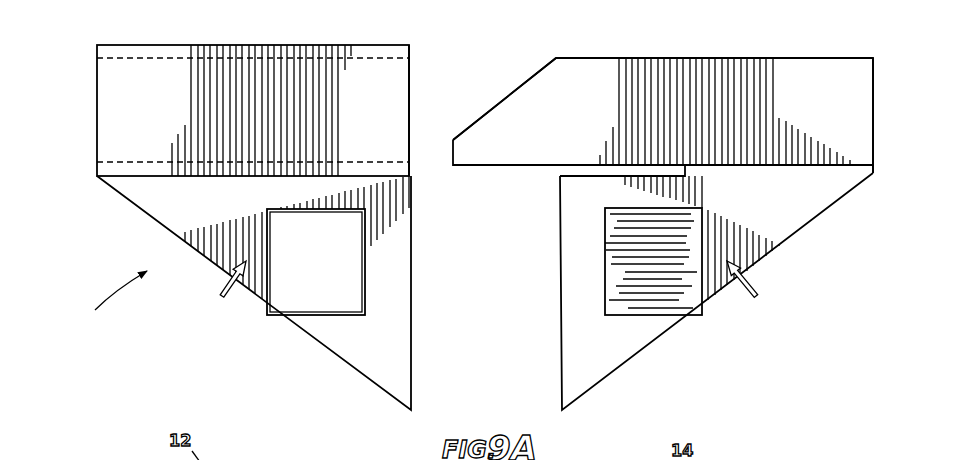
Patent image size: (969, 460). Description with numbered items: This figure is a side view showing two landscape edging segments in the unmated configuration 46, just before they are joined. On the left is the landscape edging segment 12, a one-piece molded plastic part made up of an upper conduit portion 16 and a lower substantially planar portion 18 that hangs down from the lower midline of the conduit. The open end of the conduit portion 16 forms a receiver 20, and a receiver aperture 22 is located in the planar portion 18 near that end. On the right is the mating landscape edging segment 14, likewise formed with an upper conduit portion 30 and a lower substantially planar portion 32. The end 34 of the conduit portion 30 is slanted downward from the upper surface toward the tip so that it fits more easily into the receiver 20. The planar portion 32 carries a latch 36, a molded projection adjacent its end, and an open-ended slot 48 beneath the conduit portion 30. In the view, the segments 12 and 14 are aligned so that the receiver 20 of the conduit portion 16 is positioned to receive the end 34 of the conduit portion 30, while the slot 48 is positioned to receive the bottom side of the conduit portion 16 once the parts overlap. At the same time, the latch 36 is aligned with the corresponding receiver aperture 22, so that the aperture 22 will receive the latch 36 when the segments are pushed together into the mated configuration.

The landscape edging segment 12 is at (205, 42).
The landscape edging segment 14 is at (724, 48).
The upper conduit portion 16 is at (110, 113).
The lower substantially planar portion 18 is at (160, 200).
The receiver 20 is at (428, 88).
The receiver aperture 22 is at (292, 282).
The upper conduit portion 30 is at (840, 82).
The lower substantially planar portion 32 is at (780, 213).
The end of conduit portion 34 is at (513, 97).
The latch 36 is at (673, 292).
The unmated configuration 46 is at (95, 303).
The open-ended slot 48 is at (565, 171).